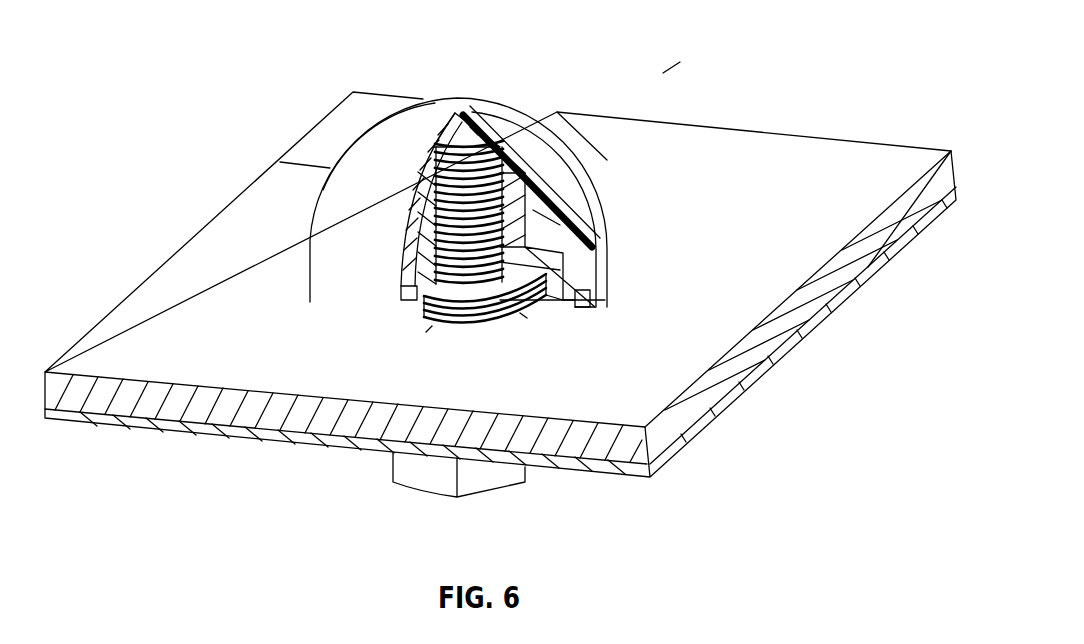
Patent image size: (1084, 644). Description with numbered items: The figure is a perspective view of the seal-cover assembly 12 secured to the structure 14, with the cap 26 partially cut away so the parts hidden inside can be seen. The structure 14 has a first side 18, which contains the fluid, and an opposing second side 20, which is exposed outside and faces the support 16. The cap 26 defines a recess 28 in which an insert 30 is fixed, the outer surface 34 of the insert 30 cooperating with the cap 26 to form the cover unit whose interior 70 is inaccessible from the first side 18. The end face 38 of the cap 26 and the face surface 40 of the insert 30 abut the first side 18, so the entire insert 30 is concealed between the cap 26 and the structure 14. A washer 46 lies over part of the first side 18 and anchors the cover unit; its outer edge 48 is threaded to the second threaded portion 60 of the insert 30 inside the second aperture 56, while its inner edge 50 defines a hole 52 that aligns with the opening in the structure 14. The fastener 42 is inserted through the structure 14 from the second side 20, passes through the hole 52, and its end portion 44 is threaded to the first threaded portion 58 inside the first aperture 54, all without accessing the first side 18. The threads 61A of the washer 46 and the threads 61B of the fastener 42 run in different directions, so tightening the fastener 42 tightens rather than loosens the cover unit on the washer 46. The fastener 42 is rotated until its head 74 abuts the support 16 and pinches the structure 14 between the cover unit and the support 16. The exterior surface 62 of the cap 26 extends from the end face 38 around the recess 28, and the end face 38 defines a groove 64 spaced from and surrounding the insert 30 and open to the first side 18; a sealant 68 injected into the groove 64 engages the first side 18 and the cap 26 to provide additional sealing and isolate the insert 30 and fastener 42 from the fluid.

The seal-cover assembly 12 is at (661, 75).
The structure 14 is at (950, 152).
The support 16 is at (835, 307).
The first side 18 is at (108, 324).
The second side 20 is at (760, 363).
The cap 26 is at (362, 160).
The recess 28 is at (530, 140).
The insert 30 is at (535, 210).
The outer surface 34 is at (622, 130).
The end face 38 is at (580, 303).
The face surface 40 is at (556, 304).
The fastener 42 is at (450, 154).
The end portion 44 is at (452, 140).
The washer 46 is at (485, 327).
The outer edge 48 is at (458, 306).
The inner edge 50 is at (590, 240).
The hole 52 is at (505, 258).
The first aperture 54 is at (339, 207).
The second aperture 56 is at (327, 319).
The first threaded portion 58 is at (410, 205).
The second threaded portion 60 is at (426, 288).
The threads of the washer 61A is at (520, 313).
The threads of the fastener 61B is at (470, 127).
The exterior surface 62 is at (540, 135).
The groove 64 is at (585, 285).
The sealant 68 is at (576, 300).
The interior 70 is at (432, 325).
The head 74 is at (427, 477).